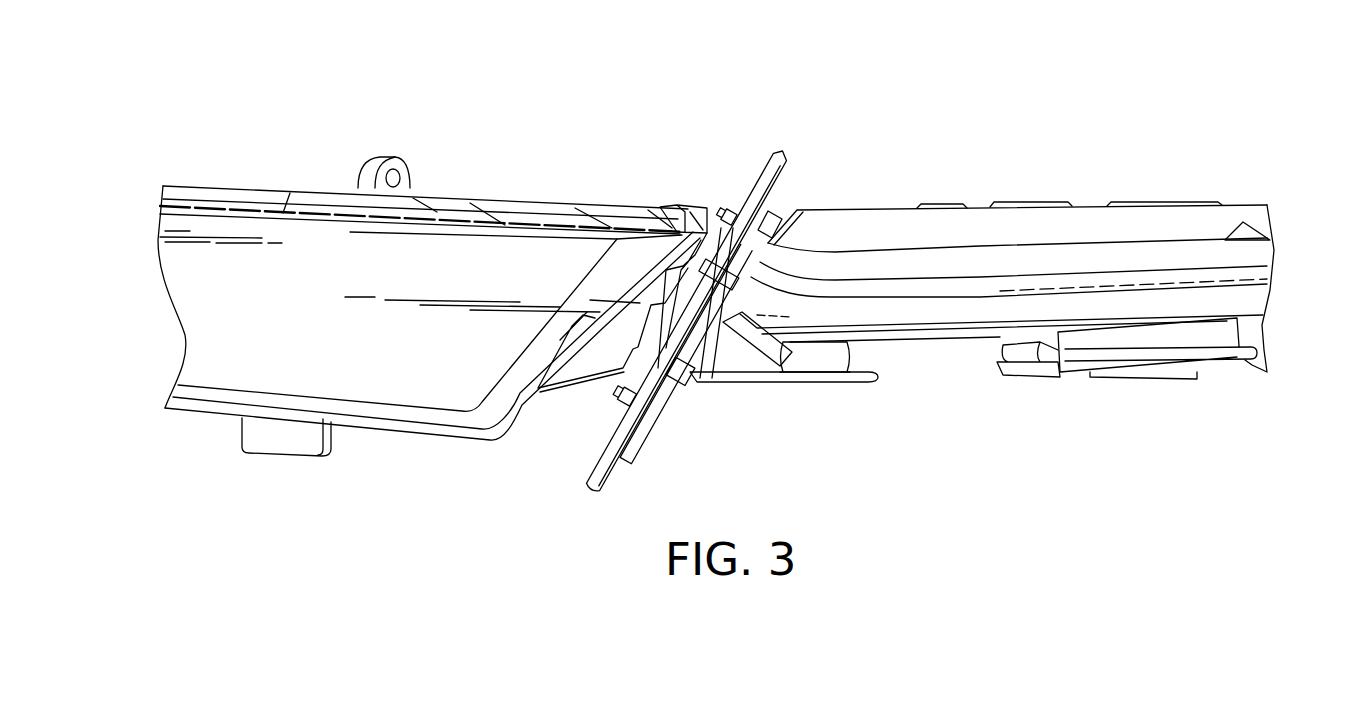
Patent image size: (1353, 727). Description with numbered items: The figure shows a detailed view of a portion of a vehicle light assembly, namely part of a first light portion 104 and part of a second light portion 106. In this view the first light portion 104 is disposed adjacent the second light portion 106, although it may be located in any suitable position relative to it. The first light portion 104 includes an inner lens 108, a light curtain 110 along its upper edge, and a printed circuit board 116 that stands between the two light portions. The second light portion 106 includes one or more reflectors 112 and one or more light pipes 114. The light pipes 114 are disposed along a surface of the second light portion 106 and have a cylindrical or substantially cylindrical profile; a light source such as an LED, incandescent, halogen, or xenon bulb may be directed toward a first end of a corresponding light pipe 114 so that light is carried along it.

The first light portion 104 is at (145, 125).
The second light portion 106 is at (1240, 110).
The inner lens 108 is at (187, 333).
The light curtain 110 is at (458, 193).
The reflector 112 is at (1152, 208).
The light pipe 114 is at (858, 267).
The printed circuit board 116 is at (780, 163).